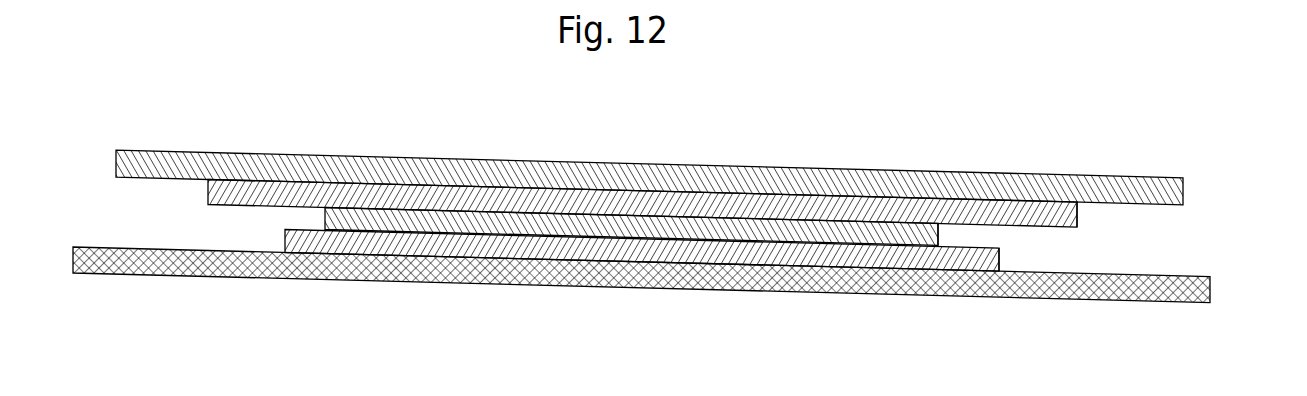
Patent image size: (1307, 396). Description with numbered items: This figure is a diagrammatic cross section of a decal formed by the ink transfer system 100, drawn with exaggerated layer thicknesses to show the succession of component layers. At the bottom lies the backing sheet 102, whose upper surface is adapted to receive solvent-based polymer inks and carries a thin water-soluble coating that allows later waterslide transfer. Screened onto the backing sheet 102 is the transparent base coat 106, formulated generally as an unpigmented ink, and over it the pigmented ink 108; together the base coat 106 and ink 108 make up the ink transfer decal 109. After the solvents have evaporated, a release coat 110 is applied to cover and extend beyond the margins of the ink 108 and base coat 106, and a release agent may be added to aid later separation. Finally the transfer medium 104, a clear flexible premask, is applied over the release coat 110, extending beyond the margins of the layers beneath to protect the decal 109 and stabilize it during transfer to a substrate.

The ink transfer system 100 is at (644, 180).
The backing sheet 102 is at (113, 247).
The transfer medium 104 is at (172, 150).
The base coat 106 is at (285, 238).
The pigmented ink 108 is at (325, 218).
The release coat 110 is at (208, 193).
The ink transfer decal 109 is at (938, 232).